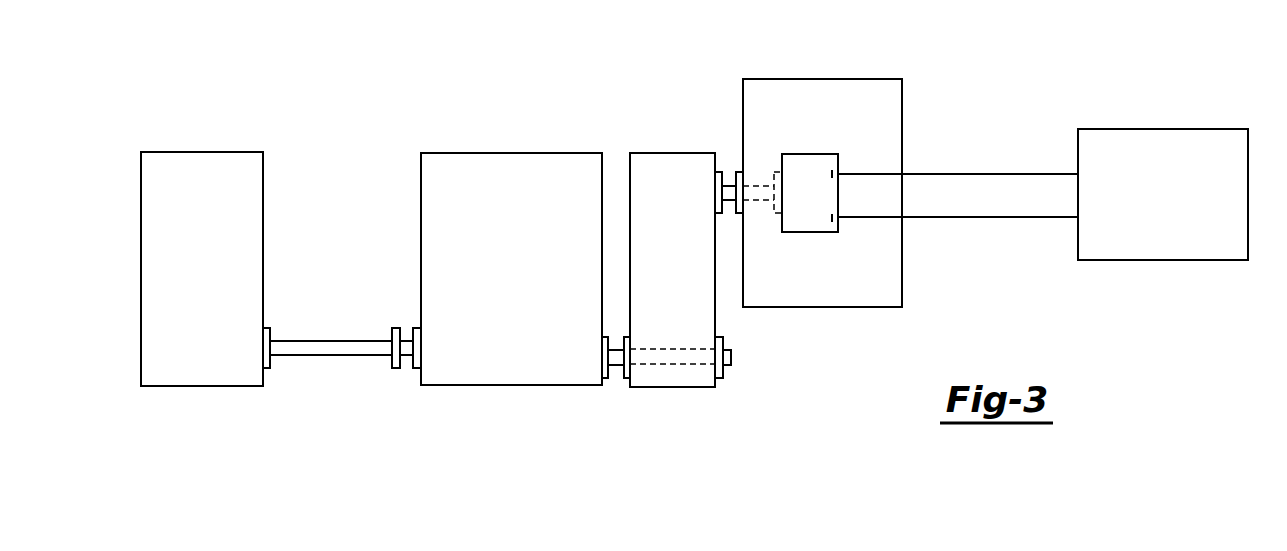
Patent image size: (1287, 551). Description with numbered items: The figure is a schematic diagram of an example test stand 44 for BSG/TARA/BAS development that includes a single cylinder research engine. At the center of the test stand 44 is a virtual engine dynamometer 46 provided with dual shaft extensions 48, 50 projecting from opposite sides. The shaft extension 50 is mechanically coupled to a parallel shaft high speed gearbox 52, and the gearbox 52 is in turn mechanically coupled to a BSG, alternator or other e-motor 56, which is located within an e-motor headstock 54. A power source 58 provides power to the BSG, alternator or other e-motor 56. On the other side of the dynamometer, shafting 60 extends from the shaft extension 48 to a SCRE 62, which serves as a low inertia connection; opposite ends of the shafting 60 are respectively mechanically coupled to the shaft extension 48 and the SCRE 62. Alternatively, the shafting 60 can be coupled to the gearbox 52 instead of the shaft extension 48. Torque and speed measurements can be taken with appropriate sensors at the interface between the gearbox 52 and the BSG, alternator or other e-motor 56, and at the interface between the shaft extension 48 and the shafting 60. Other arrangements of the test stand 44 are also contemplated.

The test stand 44 is at (298, 44).
The virtual engine dynamometer 46 is at (515, 153).
The shaft extension 48 is at (407, 340).
The shaft extension 50 is at (612, 350).
The parallel shaft high speed gearbox 52 is at (672, 153).
The e-motor headstock 54 is at (822, 79).
The BSG, alternator or other e-motor 56 is at (808, 154).
The power source 58 is at (1163, 129).
The shafting 60 is at (340, 340).
The SCRE 62 is at (202, 152).